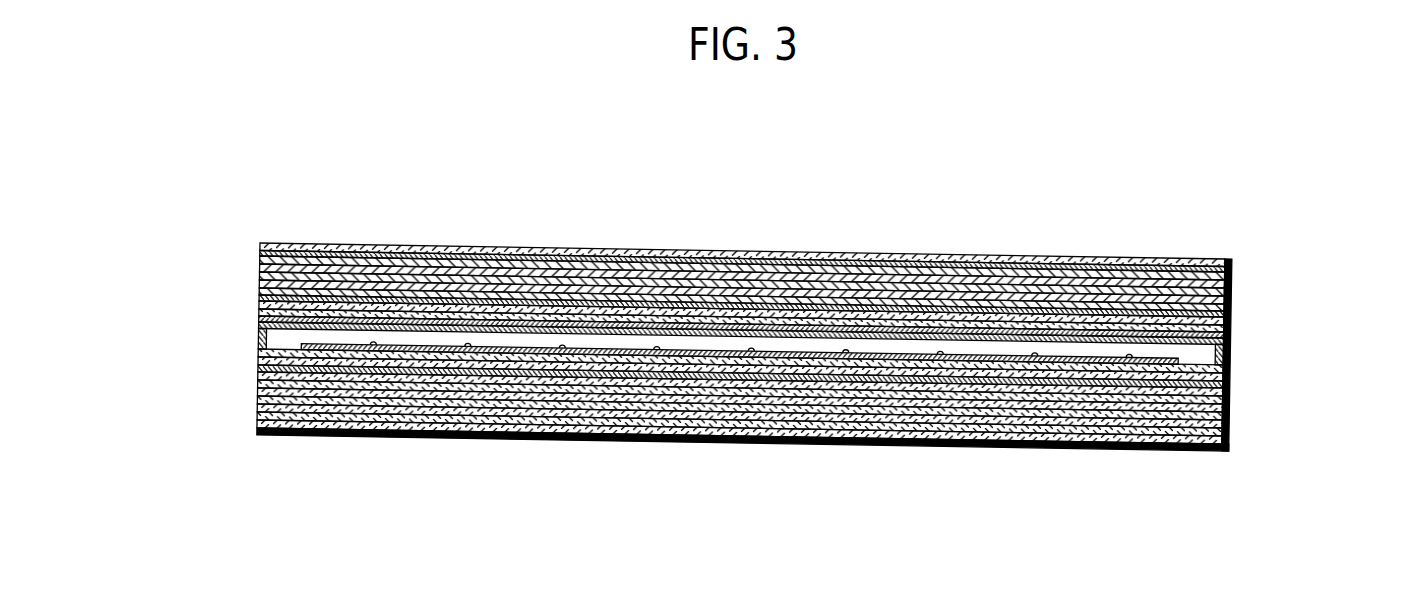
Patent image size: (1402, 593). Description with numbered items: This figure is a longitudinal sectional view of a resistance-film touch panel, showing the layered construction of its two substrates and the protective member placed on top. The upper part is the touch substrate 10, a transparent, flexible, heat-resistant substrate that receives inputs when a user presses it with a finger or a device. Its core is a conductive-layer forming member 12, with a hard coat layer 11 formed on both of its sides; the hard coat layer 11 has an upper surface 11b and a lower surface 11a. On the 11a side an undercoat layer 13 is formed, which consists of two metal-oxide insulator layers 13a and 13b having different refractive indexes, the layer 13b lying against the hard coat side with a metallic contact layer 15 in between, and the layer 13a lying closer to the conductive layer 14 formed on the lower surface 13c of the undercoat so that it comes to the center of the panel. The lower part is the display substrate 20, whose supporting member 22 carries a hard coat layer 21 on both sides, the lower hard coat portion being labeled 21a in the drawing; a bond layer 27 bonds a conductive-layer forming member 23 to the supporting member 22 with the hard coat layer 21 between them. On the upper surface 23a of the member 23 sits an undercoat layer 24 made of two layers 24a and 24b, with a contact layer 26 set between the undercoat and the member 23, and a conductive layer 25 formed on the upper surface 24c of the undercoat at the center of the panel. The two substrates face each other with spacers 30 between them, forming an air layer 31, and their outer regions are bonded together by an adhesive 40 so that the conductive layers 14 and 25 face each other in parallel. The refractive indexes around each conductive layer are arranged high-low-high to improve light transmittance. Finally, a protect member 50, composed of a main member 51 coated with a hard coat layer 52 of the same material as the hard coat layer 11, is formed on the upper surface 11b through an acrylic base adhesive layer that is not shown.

The touch substrate 10 is at (1204, 194).
The hard coat layer 11 is at (1076, 300).
The lower surface of the hard coat layer 11a is at (655, 300).
The upper surface of the hard coat layer 11b is at (1112, 280).
The conductive-layer forming member 12 is at (983, 293).
The undercoat layer 13 is at (1333, 228).
The layer of the undercoat layer 13a is at (1232, 342).
The layer of the undercoat layer 13b is at (1233, 320).
The lower surface of the undercoat layer 13c is at (585, 327).
The conductive layer 14 is at (528, 330).
The contact layer 15 is at (1220, 258).
The display substrate 20 is at (1170, 472).
The hard coat layer 21 is at (338, 433).
The lower electrode 21a is at (560, 418).
The supporting member 22 is at (426, 407).
The conductive-layer forming member 23 is at (258, 385).
The upper surface of the conductive-layer forming member 23a is at (741, 365).
The undercoat layer 24 is at (152, 335).
The layer of the undercoat layer 24a is at (262, 352).
The layer of the undercoat layer 24b is at (258, 362).
The upper surface of the undercoat layer 24c is at (848, 356).
The conductive layer 25 is at (428, 345).
The contact layer 26 is at (1232, 393).
The bond layer 27 is at (258, 400).
The spacers 30 is at (373, 341).
The air layer 31 is at (858, 343).
The adhesive 40 is at (258, 335).
The protect member 50 is at (158, 170).
The main member 51 is at (258, 253).
The hard coat layer 52 is at (258, 261).